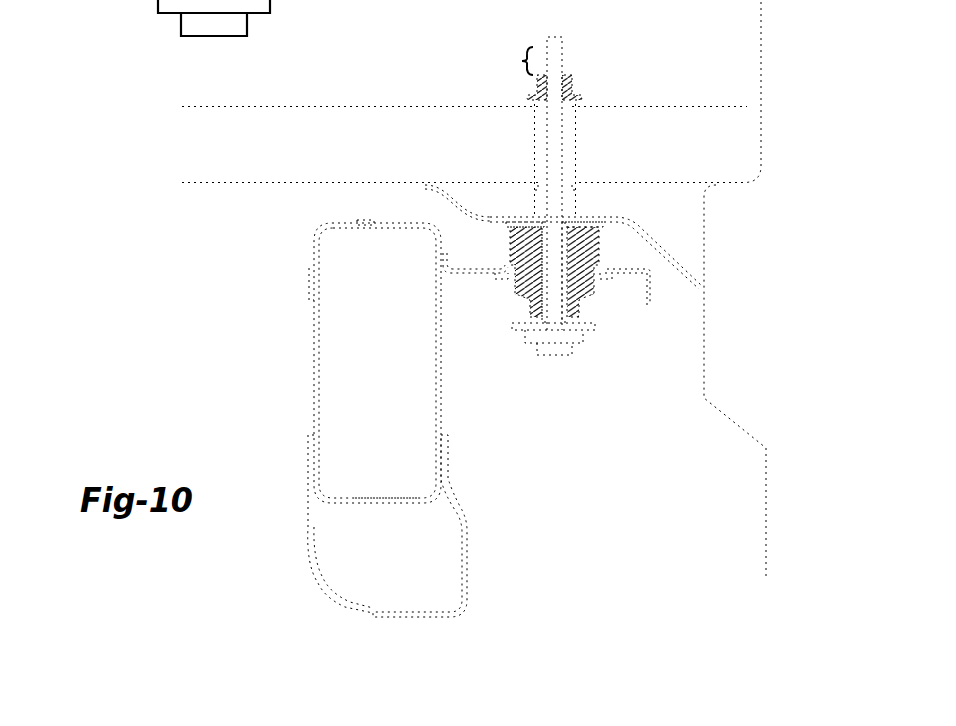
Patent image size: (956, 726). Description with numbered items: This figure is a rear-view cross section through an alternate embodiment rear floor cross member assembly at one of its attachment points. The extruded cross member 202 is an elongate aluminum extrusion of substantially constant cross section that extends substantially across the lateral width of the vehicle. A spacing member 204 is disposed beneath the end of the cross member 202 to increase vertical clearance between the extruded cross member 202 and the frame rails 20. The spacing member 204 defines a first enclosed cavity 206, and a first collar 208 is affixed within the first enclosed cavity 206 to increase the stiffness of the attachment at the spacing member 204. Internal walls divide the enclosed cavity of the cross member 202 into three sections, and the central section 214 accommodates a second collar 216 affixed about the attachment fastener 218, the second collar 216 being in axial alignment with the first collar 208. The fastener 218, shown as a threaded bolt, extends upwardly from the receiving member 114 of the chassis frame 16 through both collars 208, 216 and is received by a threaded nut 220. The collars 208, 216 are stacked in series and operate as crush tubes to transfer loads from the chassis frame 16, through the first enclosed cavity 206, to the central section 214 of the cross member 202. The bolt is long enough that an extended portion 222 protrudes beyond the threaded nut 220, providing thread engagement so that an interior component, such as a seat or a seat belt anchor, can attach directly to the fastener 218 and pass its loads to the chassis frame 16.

The chassis frame 16 is at (655, 290).
The frame rails 20 is at (314, 250).
The receiving member 114 is at (503, 228).
The extruded cross member 202 is at (388, 102).
The spacing member 204 is at (456, 208).
The first enclosed cavity 206 is at (680, 218).
The first collar 208 is at (579, 201).
The central section 214 is at (742, 126).
The second collar 216 is at (579, 142).
The attachment fastener 218 is at (562, 40).
The threaded nut 220 is at (572, 81).
The extended portion 222 is at (510, 60).